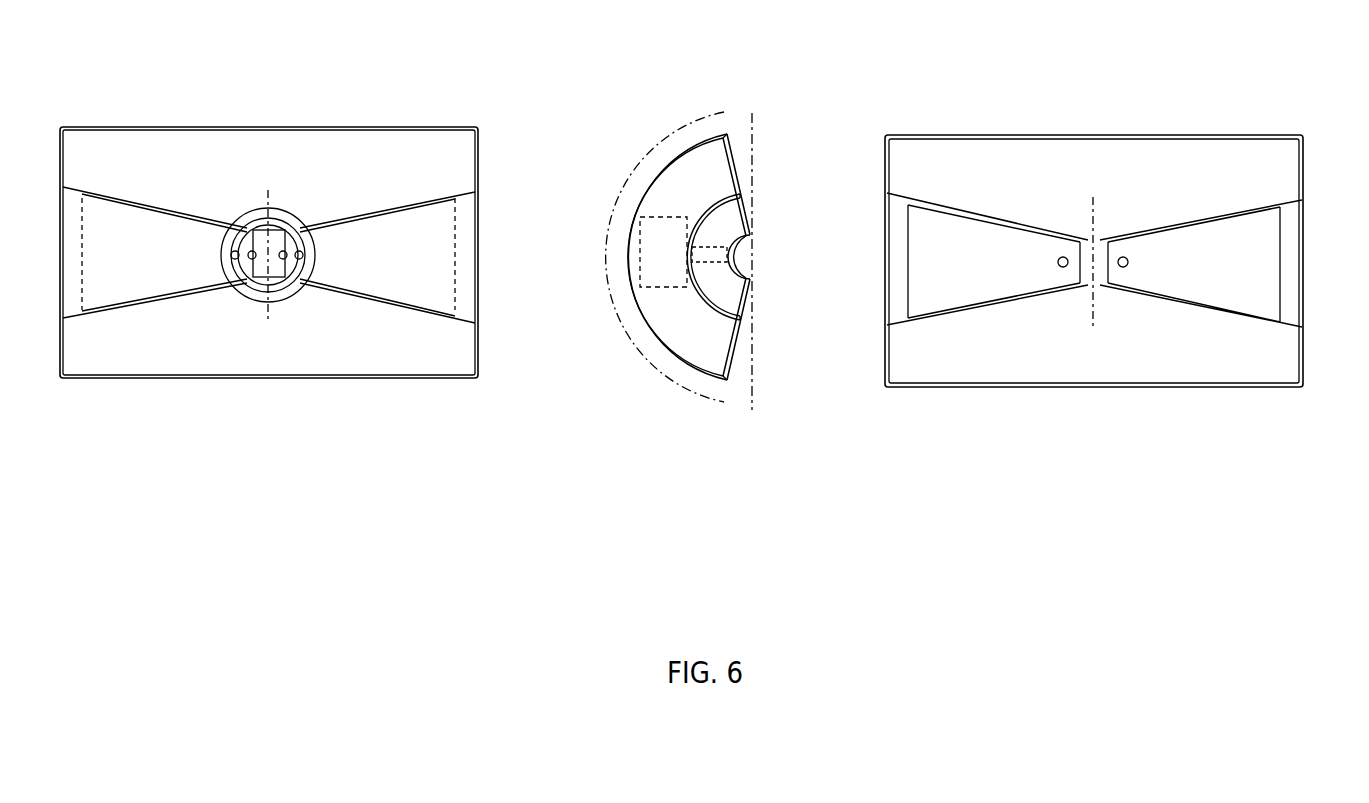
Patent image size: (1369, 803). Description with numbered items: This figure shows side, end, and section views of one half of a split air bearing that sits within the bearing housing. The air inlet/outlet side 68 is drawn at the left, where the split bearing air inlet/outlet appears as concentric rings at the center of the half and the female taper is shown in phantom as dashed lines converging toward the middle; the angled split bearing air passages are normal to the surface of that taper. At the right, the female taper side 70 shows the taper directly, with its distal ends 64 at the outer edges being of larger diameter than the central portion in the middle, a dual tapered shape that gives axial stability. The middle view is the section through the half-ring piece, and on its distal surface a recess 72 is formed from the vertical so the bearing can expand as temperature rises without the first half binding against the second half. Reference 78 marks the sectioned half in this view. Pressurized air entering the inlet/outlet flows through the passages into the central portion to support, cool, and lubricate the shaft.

The distal ends 64 is at (897, 247).
The air inlet/outlet side 68 is at (87, 100).
The female taper side 70 is at (1182, 160).
The recess 72 is at (738, 158).
The arcuate channel member 78 is at (600, 320).